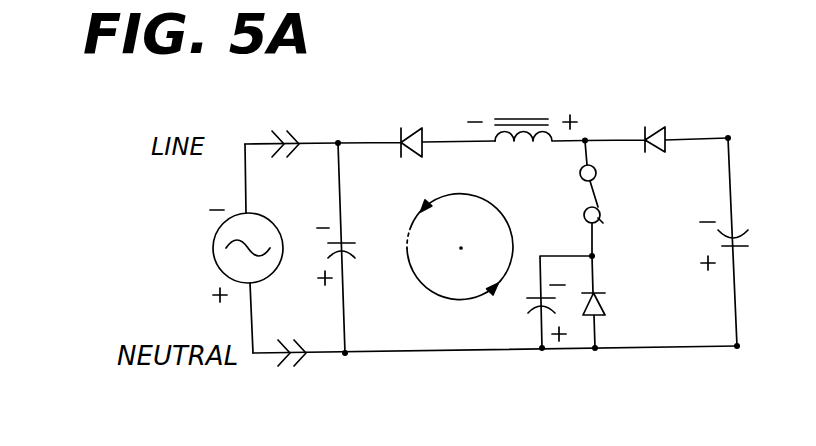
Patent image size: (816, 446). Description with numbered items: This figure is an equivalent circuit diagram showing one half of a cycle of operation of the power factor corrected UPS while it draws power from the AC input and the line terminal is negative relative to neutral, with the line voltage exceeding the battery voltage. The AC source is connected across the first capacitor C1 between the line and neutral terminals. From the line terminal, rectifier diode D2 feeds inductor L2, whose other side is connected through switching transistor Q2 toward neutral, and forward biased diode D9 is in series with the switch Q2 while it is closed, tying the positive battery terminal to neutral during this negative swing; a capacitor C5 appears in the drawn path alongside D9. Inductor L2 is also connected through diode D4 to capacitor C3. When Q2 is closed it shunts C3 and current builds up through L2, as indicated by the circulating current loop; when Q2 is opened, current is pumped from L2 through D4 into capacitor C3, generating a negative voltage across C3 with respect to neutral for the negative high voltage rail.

The first capacitor C1 is at (355, 248).
The rectifier diode D2 is at (416, 129).
The inductor L2 is at (526, 115).
The diode D4 is at (656, 125).
The switching transistor Q2 is at (571, 198).
The capacitor C5 is at (540, 302).
The diode D9 is at (613, 302).
The capacitor C3 is at (742, 242).